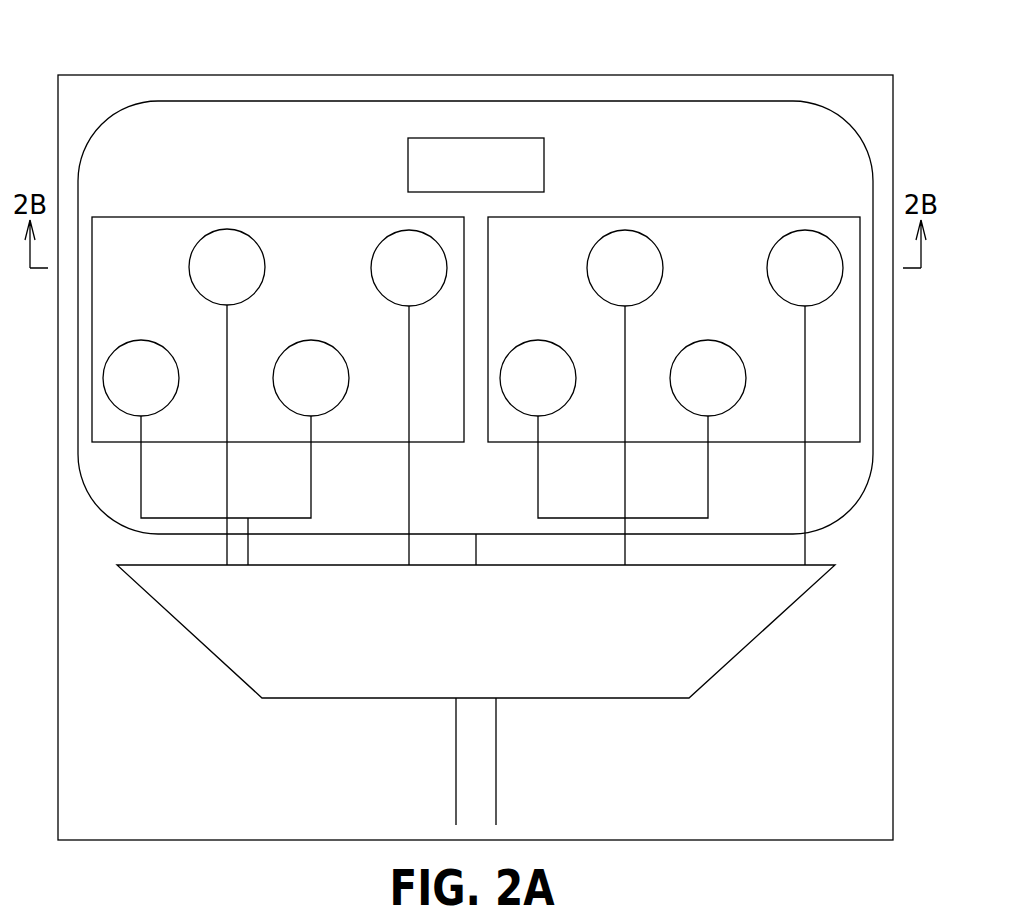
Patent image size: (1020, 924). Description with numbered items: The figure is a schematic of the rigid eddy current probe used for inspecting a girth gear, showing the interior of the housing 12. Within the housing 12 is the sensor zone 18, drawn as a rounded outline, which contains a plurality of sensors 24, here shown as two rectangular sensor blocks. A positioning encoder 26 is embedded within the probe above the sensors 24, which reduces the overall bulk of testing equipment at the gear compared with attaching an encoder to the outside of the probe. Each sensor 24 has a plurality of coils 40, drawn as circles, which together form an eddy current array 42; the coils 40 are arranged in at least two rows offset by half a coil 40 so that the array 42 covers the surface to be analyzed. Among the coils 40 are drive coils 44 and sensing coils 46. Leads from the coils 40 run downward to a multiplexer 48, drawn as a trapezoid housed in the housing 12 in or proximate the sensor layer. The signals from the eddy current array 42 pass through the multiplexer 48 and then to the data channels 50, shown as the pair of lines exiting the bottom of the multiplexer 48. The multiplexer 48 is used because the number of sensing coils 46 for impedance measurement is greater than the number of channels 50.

The housing 12 is at (132, 75).
The sensor zone 18 is at (829, 122).
The sensor 24 is at (164, 230).
The positioning encoder 26 is at (530, 165).
The coil 40 is at (143, 350).
The eddy current array 42 is at (792, 273).
The drive coil 44 is at (310, 350).
The sensing coil 46 is at (386, 270).
The multiplexer 48 is at (745, 628).
The data channel 50 is at (485, 767).